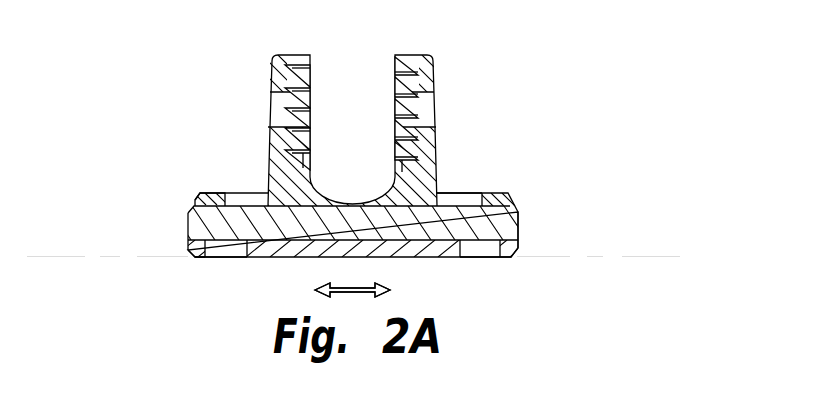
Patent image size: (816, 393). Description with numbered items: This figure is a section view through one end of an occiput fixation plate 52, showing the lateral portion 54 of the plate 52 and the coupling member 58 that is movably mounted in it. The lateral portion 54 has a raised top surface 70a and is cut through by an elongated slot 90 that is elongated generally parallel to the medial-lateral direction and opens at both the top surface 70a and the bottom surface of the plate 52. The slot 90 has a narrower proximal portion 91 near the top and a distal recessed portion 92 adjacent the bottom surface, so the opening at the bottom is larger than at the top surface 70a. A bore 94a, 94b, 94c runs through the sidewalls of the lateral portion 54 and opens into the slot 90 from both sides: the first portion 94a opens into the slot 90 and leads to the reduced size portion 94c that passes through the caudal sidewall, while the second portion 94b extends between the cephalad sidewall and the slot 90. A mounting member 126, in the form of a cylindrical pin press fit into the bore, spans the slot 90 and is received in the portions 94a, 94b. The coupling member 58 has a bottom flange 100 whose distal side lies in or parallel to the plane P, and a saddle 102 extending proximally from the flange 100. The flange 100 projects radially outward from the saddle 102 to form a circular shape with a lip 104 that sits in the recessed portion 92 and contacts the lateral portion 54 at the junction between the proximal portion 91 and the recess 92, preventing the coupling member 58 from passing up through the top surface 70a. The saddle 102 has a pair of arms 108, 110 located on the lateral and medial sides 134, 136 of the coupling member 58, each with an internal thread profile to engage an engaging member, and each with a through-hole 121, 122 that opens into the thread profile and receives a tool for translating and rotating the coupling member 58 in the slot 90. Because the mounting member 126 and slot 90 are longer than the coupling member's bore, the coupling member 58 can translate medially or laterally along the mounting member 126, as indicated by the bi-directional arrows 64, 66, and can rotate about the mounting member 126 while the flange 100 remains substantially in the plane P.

The plate 52 is at (505, 182).
The lateral portion 54 is at (196, 194).
The coupling member 58 is at (448, 50).
The bi-directional arrow 64 is at (350, 283).
The bi-directional arrow 66 is at (350, 283).
The top surface 70a is at (210, 192).
The elongated slot 90 is at (458, 200).
The proximal portion 91 is at (235, 193).
The distal recessed portion 92 is at (210, 257).
The first portion of bore 94a is at (195, 257).
The second portion of bore 94b is at (518, 222).
The reduced size portion of bore 94c is at (188, 218).
The bottom flange 100 is at (440, 258).
The saddle 102 is at (272, 68).
The lip 104 is at (247, 258).
The arm 108 is at (273, 77).
The arm 110 is at (433, 78).
The through-hole 121 is at (278, 108).
The through-hole 122 is at (429, 115).
The mounting member 126 is at (503, 257).
The lateral side 134 is at (269, 158).
The medial side 136 is at (436, 138).
The plane P is at (643, 255).